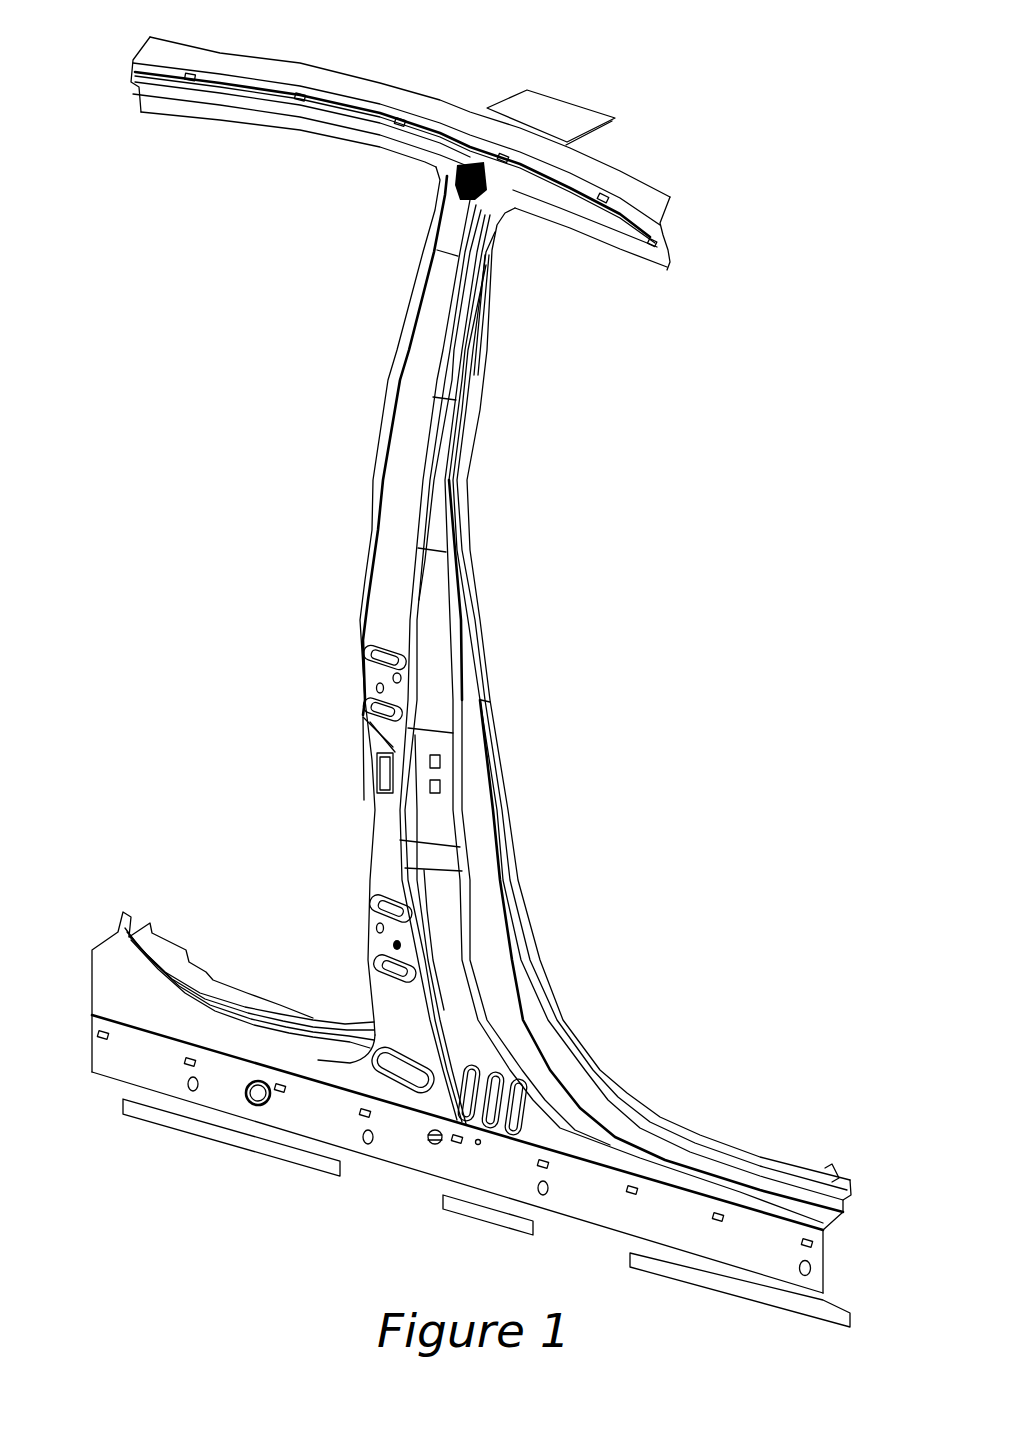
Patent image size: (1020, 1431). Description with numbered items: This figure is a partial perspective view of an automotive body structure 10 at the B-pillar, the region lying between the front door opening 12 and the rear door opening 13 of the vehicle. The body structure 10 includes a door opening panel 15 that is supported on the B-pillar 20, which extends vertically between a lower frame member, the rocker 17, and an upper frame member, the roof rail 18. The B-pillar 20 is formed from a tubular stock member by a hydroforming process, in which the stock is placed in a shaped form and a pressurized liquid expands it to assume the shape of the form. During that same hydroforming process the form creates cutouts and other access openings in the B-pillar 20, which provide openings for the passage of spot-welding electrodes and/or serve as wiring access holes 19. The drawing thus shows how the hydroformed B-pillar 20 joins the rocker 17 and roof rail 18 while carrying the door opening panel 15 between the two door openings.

The automotive body structure 10 is at (672, 120).
The front door opening 12 is at (632, 373).
The rear door opening 13 is at (242, 299).
The door opening panel 15 is at (495, 990).
The rocker 17 is at (307, 1127).
The roof rail 18 is at (307, 76).
The wiring access holes 19 is at (380, 764).
The B-pillar 20 is at (390, 557).